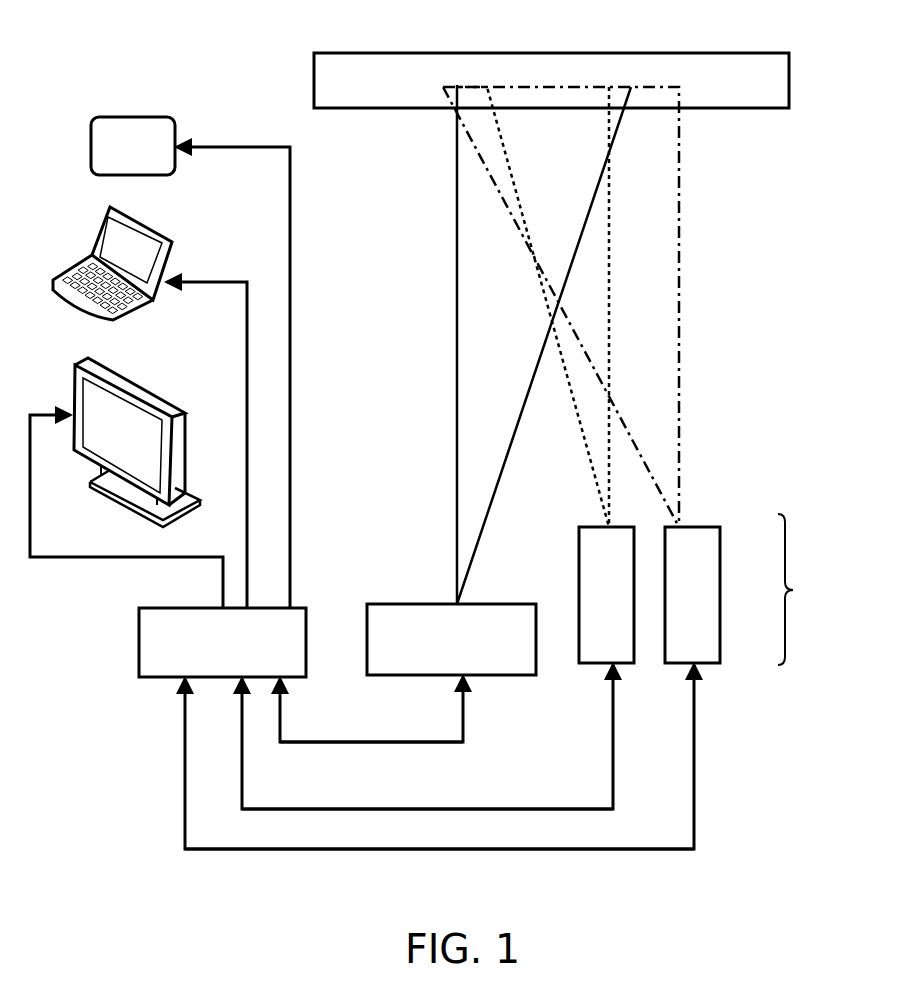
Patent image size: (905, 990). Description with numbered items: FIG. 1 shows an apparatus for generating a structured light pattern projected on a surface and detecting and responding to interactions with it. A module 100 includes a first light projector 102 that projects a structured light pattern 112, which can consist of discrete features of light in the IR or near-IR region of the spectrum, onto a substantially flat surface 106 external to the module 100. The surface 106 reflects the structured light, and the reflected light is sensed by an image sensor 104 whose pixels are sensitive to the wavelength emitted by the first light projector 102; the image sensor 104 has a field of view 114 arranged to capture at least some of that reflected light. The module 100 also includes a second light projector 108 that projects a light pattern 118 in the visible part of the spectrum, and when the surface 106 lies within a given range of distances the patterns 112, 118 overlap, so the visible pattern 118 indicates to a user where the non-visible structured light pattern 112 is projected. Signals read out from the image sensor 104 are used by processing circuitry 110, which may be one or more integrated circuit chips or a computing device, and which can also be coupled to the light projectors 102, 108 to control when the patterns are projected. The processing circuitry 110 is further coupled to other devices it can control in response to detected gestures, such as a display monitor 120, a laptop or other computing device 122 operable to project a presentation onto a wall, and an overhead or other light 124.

The module 100 is at (810, 589).
The first light projector 102 is at (579, 573).
The image sensor 104 is at (494, 677).
The surface 106 is at (780, 62).
The second light projector 108 is at (718, 575).
The processing circuitry 110 is at (139, 640).
The structured light pattern 112 is at (583, 432).
The field of view 114 is at (457, 327).
The light pattern 118 is at (680, 305).
The display monitor 120 is at (128, 372).
The laptop or other computing device 122 is at (96, 238).
The overhead or other light 124 is at (91, 143).